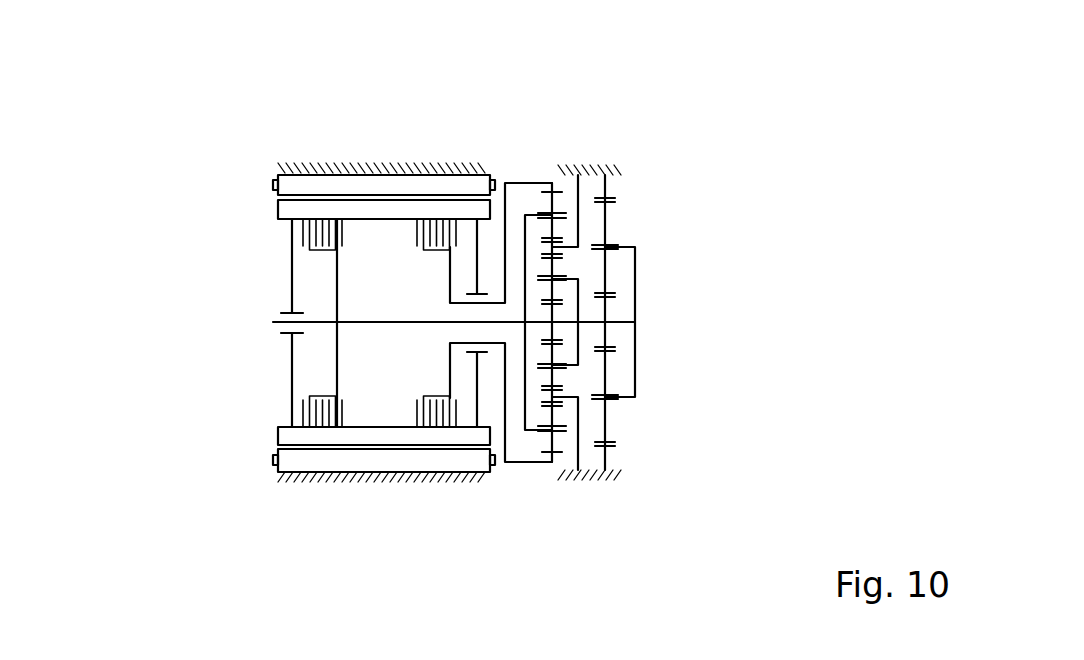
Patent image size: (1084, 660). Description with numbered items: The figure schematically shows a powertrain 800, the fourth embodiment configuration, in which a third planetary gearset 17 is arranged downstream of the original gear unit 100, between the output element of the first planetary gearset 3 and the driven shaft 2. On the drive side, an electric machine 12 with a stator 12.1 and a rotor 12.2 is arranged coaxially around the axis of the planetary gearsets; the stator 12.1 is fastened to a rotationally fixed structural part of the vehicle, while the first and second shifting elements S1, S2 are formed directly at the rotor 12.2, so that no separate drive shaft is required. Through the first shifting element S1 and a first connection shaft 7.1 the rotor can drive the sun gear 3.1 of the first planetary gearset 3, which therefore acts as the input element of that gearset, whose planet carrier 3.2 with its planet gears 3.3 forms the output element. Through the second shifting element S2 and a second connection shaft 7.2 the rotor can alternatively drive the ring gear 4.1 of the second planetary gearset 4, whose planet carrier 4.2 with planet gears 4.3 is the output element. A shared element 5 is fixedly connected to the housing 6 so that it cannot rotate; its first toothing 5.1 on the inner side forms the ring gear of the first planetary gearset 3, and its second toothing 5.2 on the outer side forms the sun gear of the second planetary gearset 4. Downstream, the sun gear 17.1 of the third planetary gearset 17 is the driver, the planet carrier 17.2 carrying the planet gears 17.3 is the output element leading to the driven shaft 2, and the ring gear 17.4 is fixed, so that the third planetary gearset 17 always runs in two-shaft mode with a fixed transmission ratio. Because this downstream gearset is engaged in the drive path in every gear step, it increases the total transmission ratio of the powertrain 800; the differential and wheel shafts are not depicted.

The powertrain 800 is at (780, 113).
The gear unit 100 is at (600, 147).
The electric machine 12 is at (280, 147).
The stator 12.1 is at (360, 186).
The rotor 12.2 is at (290, 212).
The first shifting element S1 is at (331, 432).
The second shifting element S2 is at (429, 432).
The first connection shaft 7.1 is at (337, 287).
The second connection shaft 7.2 is at (450, 258).
The driven shaft 2 is at (645, 323).
The first planetary gearset 3 is at (540, 378).
The sun gear 3.1 is at (567, 313).
The planet carrier 3.2 is at (565, 387).
The planet gears 3.3 is at (552, 292).
The second planetary gearset 4 is at (540, 440).
The ring gear 4.1 is at (557, 190).
The planet carrier 4.2 is at (538, 213).
The planet gears 4.3 is at (553, 236).
The shared element 5 is at (548, 249).
The first toothing 5.1 is at (563, 253).
The second toothing 5.2 is at (567, 247).
The housing 6 is at (596, 480).
The third planetary gearset 17 is at (633, 205).
The sun gear 17.1 is at (607, 337).
The planet carrier 17.2 is at (633, 403).
The planet gears 17.3 is at (607, 417).
The ring gear 17.4 is at (610, 187).